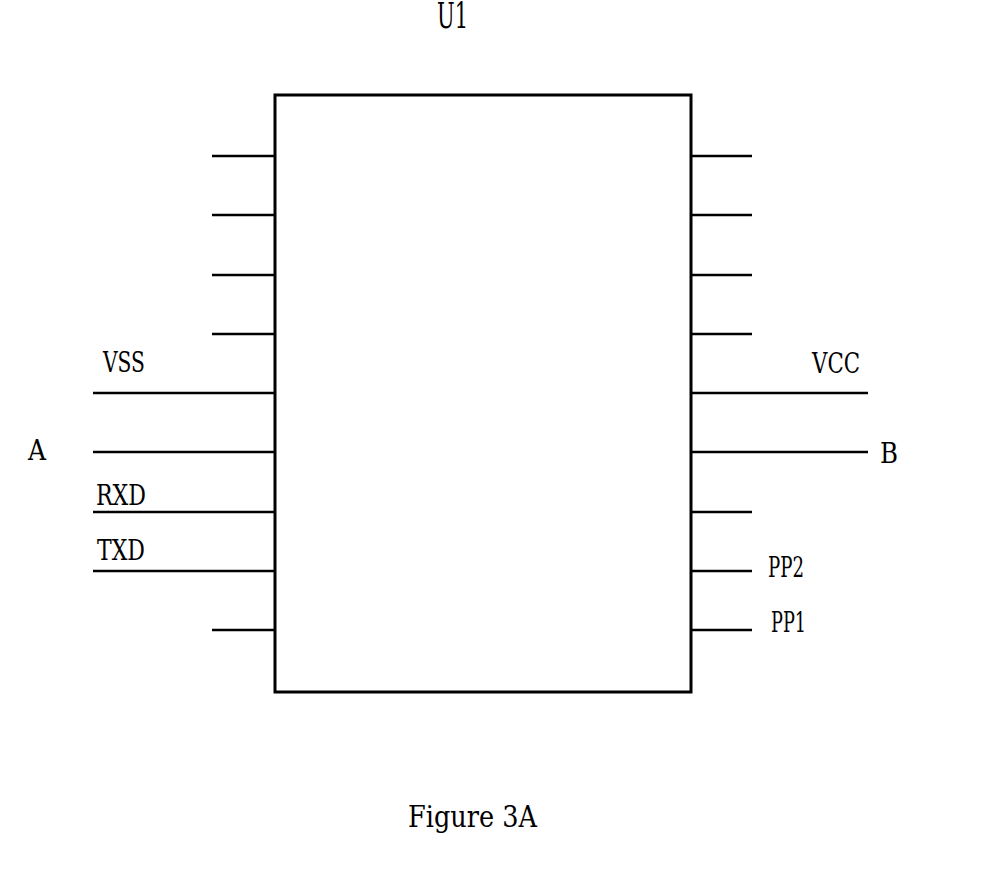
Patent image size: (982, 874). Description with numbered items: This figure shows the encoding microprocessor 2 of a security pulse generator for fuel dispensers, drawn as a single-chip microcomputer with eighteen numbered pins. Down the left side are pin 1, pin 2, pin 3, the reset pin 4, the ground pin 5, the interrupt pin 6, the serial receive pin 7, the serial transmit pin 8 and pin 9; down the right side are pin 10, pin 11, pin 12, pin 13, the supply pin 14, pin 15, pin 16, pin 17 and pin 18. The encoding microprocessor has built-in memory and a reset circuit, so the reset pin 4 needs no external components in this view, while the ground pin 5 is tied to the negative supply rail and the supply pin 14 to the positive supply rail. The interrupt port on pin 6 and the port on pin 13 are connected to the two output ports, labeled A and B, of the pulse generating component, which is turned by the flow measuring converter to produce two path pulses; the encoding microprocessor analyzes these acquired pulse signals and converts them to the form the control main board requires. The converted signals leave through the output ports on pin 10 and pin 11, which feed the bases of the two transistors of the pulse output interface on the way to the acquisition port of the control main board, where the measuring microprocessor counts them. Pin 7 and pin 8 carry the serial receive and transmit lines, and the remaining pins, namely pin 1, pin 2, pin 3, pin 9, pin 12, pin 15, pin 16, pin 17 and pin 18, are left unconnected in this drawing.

The pulse generating component 1 is at (278, 142).
The encoding microprocessor 2 is at (278, 201).
The pin 3 (PA4) 3 is at (277, 261).
The pulse output interface 4 is at (278, 320).
The measuring microprocessor 5 is at (219, 379).
The pin 6 (INT) 6 is at (217, 438).
The control main board 7 is at (221, 498).
The pin 8 (TXD) 8 is at (221, 557).
The pin 9 (PB3) 9 is at (278, 616).
The pin 10 (PB4) 10 is at (682, 620).
The pin 11 (PB5) 11 is at (682, 559).
The pin 12 (PB6) 12 is at (690, 497).
The pin 13 (PB7) 13 is at (748, 437).
The pin 14 (VDD) 14 is at (747, 378).
The pin 15 (PA6) 15 is at (690, 319).
The pin 16 (PA7) 16 is at (690, 260).
The pin 17 (PA0) 17 is at (690, 200).
The pin 18 (PA1) 18 is at (690, 141).